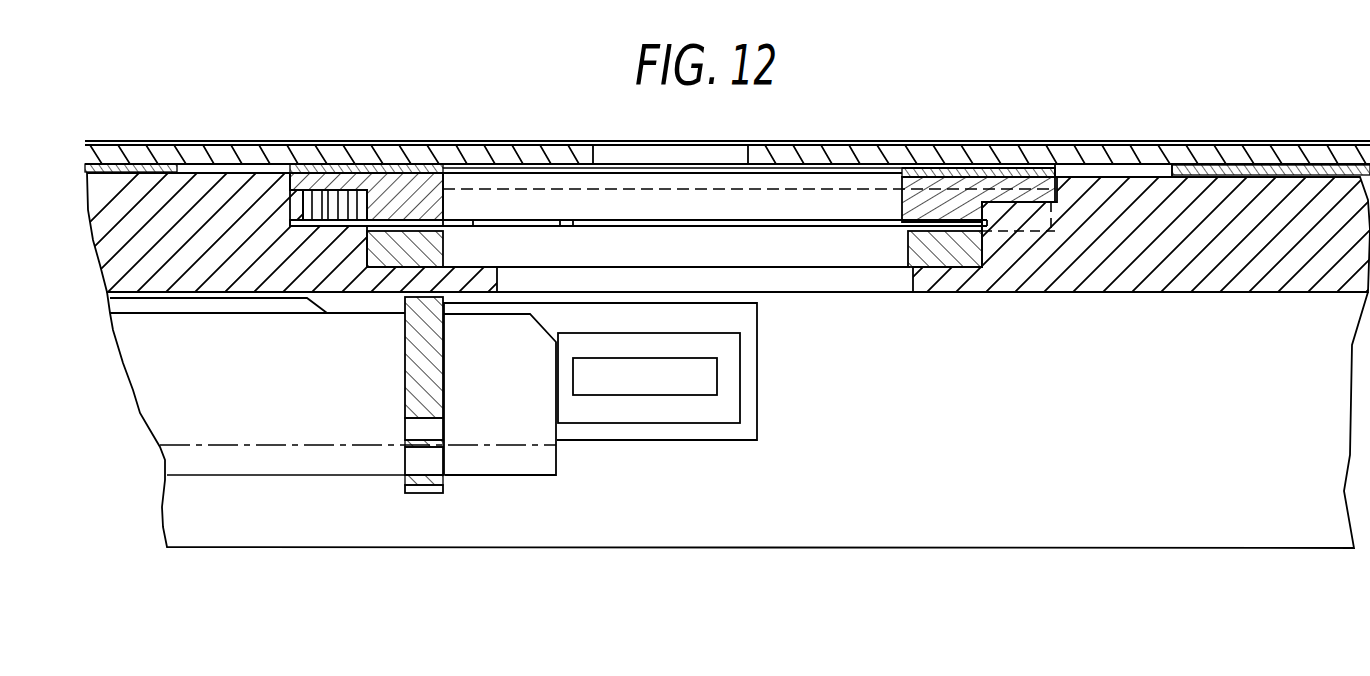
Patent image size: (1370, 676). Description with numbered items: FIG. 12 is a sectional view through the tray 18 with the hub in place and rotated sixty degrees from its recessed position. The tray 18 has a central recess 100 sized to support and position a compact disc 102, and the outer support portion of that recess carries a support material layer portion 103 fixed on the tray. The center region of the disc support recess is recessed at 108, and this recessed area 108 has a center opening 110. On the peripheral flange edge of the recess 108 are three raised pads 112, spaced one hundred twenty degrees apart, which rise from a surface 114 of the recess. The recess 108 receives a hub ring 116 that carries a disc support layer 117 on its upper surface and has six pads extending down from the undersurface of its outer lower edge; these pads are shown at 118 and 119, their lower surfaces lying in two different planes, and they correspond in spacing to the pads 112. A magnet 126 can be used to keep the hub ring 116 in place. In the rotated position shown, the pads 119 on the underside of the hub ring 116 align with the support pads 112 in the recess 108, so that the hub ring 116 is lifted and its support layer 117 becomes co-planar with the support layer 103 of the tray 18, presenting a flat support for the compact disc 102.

The tray 18 is at (1130, 265).
The central recess 100 is at (1130, 141).
The compact disc 102 is at (262, 157).
The support material layer portion 103 is at (1261, 167).
The recessed area 108 is at (297, 208).
The center opening 110 is at (779, 256).
The raised pads 112 is at (1038, 218).
The surface 114 is at (340, 222).
The hub ring 116 is at (904, 216).
The disc support layer 117 is at (993, 170).
The pads 118 is at (320, 232).
The pads 119 is at (1004, 200).
The magnet 126 is at (430, 239).